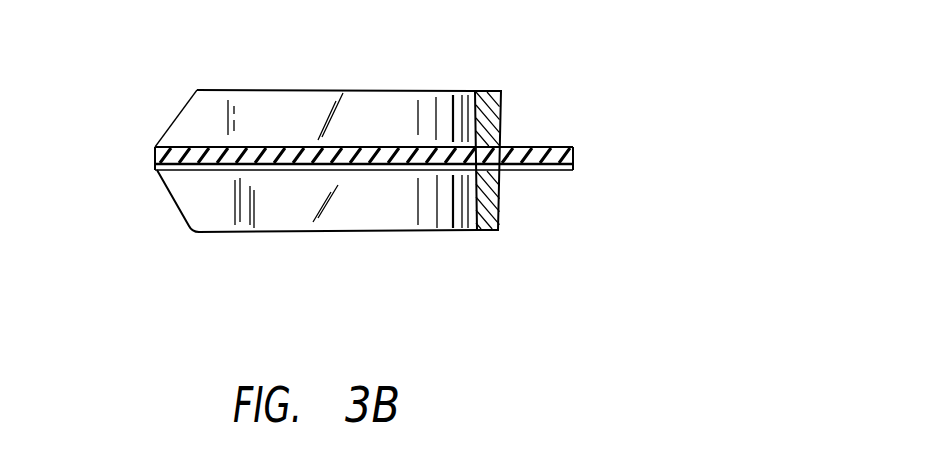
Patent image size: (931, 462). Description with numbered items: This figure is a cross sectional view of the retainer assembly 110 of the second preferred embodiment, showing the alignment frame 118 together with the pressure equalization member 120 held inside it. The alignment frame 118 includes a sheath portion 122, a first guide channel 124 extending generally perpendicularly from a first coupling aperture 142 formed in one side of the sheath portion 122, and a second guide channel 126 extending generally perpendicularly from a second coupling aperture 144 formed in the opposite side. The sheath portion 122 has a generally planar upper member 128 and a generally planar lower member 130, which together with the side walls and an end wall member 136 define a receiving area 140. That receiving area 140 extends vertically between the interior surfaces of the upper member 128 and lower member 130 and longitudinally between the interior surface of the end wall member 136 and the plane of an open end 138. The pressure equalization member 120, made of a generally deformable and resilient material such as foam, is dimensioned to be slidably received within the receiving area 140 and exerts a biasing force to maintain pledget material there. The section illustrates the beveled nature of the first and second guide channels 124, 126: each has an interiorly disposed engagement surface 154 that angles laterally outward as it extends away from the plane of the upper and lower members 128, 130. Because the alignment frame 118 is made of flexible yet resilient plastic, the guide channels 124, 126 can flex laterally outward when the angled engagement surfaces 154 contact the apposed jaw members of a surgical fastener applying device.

The retainer assembly 110 is at (363, 151).
The alignment frame 118 is at (388, 151).
The pressure equalization member 120 is at (363, 149).
The sheath portion 122 is at (594, 158).
The first guide channel 124 is at (433, 91).
The second guide channel 126 is at (338, 232).
The upper member 128 is at (401, 97).
The lower member 130 is at (408, 219).
The end wall member 136 is at (575, 170).
The open end 138 is at (138, 166).
The receiving area 140 is at (217, 128).
The first coupling aperture 142 is at (293, 126).
The second coupling aperture 144 is at (193, 188).
The engagement surface 154 is at (375, 90).